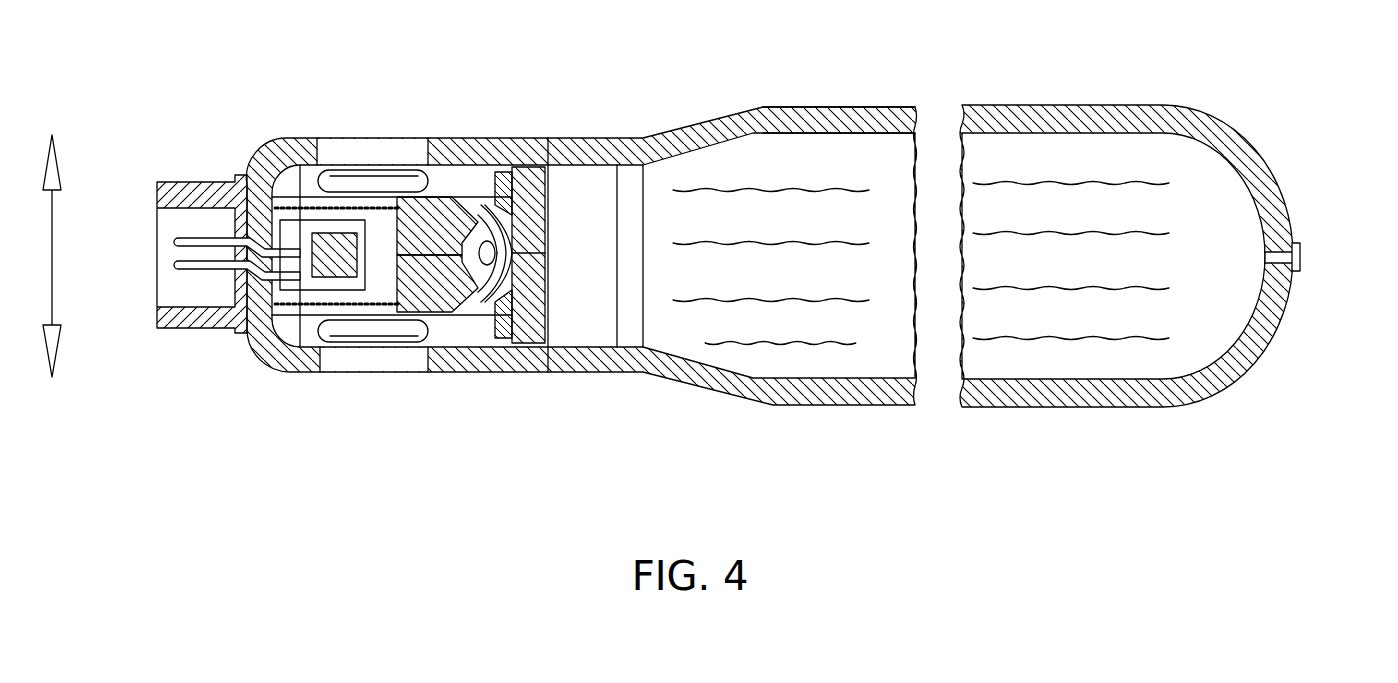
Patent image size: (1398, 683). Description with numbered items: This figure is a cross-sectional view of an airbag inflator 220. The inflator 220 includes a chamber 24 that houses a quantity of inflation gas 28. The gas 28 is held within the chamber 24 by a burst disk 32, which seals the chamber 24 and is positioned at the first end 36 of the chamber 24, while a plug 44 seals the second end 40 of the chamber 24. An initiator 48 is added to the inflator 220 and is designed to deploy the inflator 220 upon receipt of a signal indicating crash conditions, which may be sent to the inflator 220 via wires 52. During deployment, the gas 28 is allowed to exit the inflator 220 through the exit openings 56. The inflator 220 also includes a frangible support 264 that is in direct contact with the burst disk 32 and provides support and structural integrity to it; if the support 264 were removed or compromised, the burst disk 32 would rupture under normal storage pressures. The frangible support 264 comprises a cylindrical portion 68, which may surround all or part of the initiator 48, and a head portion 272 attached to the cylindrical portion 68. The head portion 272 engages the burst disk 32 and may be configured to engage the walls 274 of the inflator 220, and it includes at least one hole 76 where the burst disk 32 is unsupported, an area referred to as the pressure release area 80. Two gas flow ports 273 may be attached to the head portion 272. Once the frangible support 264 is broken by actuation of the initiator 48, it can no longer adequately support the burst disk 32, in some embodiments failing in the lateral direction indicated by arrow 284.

The chamber 24 is at (660, 283).
The inflation gas 28 is at (818, 190).
The burst disk 32 is at (549, 233).
The first end 36 is at (567, 137).
The second end 40 is at (1300, 192).
The plug 44 is at (1302, 251).
The initiator 48 is at (265, 150).
The wires 52 is at (190, 265).
The exit openings 56 is at (347, 152).
The cylindrical portion 68 is at (445, 300).
The hole 76 is at (418, 205).
The pressure release area 80 is at (495, 335).
The inflator 220 is at (830, 87).
The frangible support 264 is at (430, 262).
The head portion 272 is at (455, 232).
The gas flow ports 273 is at (493, 230).
The walls 274 is at (480, 215).
The arrow 284 is at (53, 262).